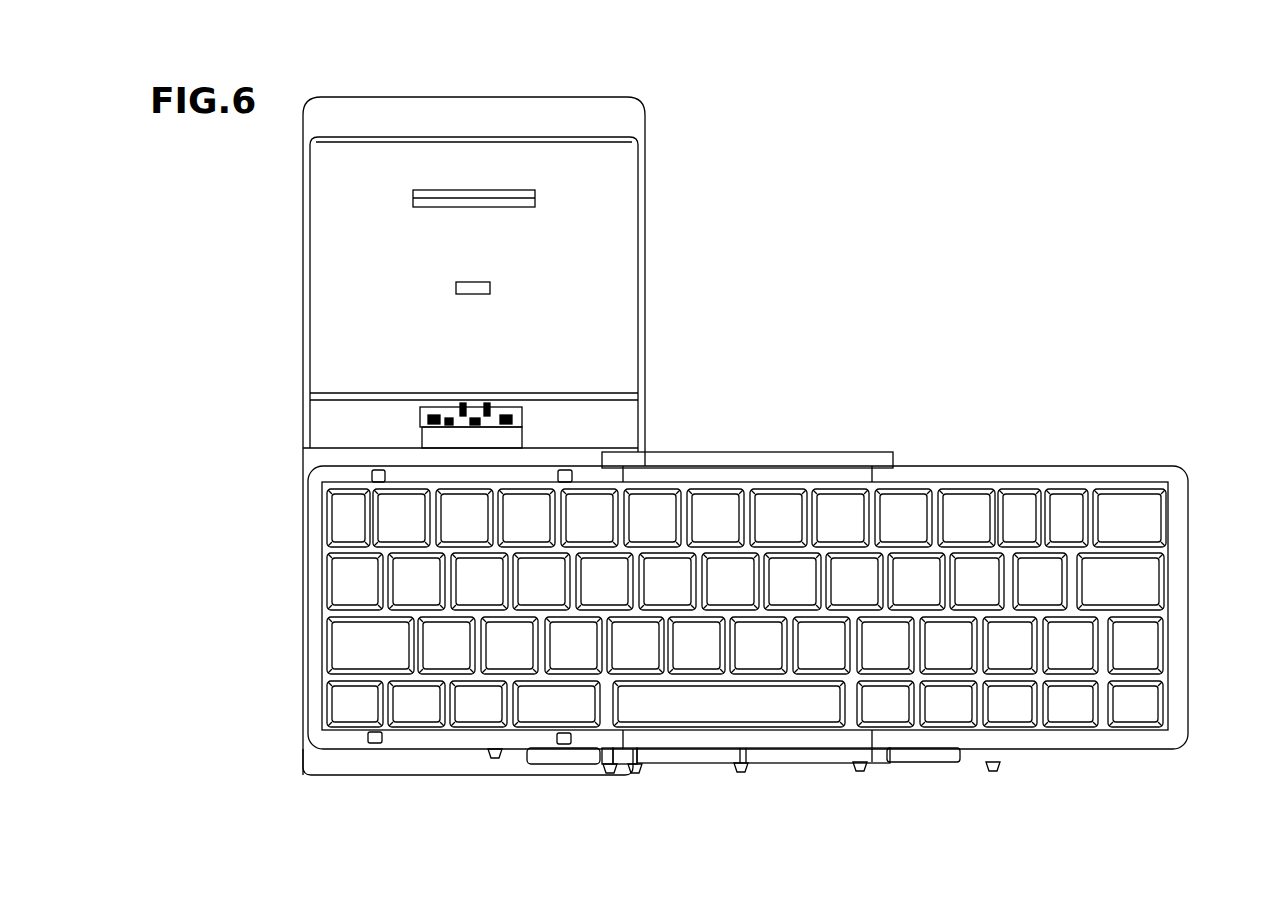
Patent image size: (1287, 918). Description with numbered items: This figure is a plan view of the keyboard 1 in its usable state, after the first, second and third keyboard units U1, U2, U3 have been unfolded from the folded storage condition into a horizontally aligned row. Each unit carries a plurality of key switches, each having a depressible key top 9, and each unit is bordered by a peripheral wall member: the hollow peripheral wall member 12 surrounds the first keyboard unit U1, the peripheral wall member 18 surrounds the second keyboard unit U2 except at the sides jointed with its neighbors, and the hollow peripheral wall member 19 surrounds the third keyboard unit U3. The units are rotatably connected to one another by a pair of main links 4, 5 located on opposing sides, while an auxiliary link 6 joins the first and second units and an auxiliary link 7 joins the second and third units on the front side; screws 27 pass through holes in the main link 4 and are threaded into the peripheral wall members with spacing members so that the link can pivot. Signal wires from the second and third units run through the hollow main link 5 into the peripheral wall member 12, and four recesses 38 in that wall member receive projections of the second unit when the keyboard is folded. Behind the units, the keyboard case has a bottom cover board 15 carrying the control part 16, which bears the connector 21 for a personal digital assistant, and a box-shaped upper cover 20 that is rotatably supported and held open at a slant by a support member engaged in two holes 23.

The keyboard 1 is at (856, 343).
The main link 4 is at (712, 762).
The main link 5 is at (787, 458).
The auxiliary link 6 is at (549, 755).
The auxiliary link 7 is at (918, 762).
The key top 9 is at (1143, 512).
The peripheral wall member 12 is at (310, 592).
The bottom cover board 15 is at (409, 764).
The control part 16 is at (640, 410).
The peripheral wall member 18 is at (845, 478).
The peripheral wall member 19 is at (1118, 468).
The upper cover 20 is at (647, 284).
The connector 21 is at (475, 410).
The holes 23 is at (492, 288).
The screw 27 is at (496, 760).
The recesses 38 is at (567, 470).
The first keyboard unit U1 is at (306, 525).
The second keyboard unit U2 is at (718, 466).
The third keyboard unit U3 is at (1043, 551).